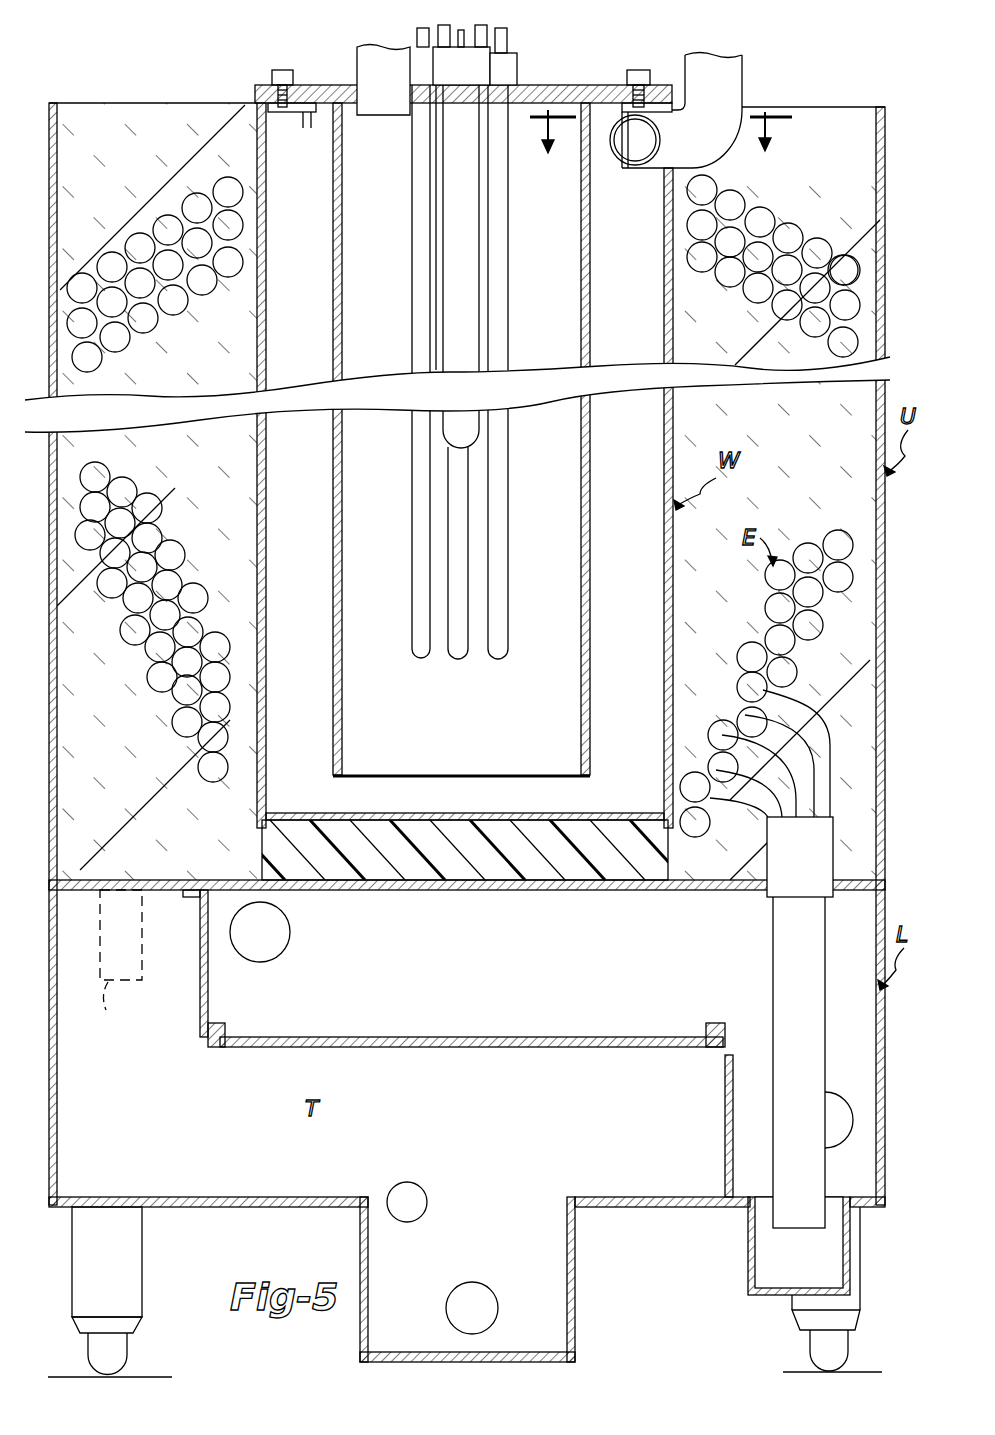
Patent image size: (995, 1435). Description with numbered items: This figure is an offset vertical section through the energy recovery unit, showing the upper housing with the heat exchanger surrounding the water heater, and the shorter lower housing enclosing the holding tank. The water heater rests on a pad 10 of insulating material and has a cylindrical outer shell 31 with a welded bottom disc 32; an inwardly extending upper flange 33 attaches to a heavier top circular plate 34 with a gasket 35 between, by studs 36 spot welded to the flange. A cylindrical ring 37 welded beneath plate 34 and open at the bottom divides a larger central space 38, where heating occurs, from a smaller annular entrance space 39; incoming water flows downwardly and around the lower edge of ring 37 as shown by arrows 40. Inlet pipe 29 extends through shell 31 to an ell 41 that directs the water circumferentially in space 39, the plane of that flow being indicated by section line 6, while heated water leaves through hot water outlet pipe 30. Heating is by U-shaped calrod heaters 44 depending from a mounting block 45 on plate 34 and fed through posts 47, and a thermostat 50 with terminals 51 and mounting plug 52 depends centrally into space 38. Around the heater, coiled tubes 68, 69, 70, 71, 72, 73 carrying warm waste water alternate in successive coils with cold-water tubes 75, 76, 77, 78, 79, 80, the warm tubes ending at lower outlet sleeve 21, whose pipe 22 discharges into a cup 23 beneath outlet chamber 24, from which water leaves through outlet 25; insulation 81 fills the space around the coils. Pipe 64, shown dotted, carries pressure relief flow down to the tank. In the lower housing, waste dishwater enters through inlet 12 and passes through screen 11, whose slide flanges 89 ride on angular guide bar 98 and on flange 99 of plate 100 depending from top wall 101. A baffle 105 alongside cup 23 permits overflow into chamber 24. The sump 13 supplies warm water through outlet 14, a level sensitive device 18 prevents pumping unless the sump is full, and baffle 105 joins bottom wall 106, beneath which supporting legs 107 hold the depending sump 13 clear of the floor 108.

The section line 6— 6 is at (654, 139).
The pad 10 is at (415, 876).
The screen 11 is at (490, 1037).
The waste dishwasher inlet 12 is at (284, 940).
The sump 13 is at (576, 1306).
The outlet 14 is at (494, 1302).
The level sensitive device 18 is at (425, 1196).
The lower outlet sleeve 21 is at (814, 868).
The pipe 22 is at (815, 1086).
The cup 23 is at (748, 1278).
The outlet chamber 24 is at (866, 1050).
The outlet 25 is at (848, 1115).
The inlet pipe 29 is at (742, 72).
The hot water outlet pipe 30 is at (357, 68).
The outer shell 31 is at (266, 308).
The bottom disc 32 is at (455, 813).
The upper flange 33 is at (287, 108).
The top circular plate 34 is at (310, 85).
The gasket 35 is at (333, 112).
The studs 36 is at (278, 96).
The cylindrical ring 37 is at (342, 310).
The central space 38 is at (388, 580).
The annular entrance space 39 is at (308, 256).
The arrows 40 is at (640, 150).
The ell 41 is at (660, 138).
The U-shaped calrod heaters 44 is at (412, 204).
The mounting block 45 is at (517, 66).
The posts 47 is at (417, 36).
The thermostat 50 is at (477, 230).
The terminals 51 is at (440, 26).
The mounting plug 52 is at (476, 77).
The pipe 64 is at (121, 961).
The coiled tube 68 is at (705, 186).
The coiled tube 69 is at (733, 204).
The coiled tube 70 is at (780, 216).
The coiled tube 71 is at (790, 240).
The coiled tube 72 is at (820, 252).
The coiled tube 73 is at (846, 270).
The coiled tube 75 is at (700, 225).
The coiled tube 76 is at (730, 250).
The coiled tube 77 is at (758, 262).
The coiled tube 78 is at (787, 278).
The coiled tube 79 is at (815, 296).
The coiled tube 80 is at (845, 300).
The insulation 81 is at (168, 156).
The slide flanges 89 is at (224, 1028).
The angular guide bar 98 is at (714, 1050).
The flange 99 is at (212, 1047).
The plate 100 is at (208, 994).
The top wall 101 is at (630, 887).
The baffle 105 is at (725, 1130).
The bottom wall 106 is at (222, 1207).
The supporting legs 107 is at (142, 1298).
The floor 108 is at (150, 1377).